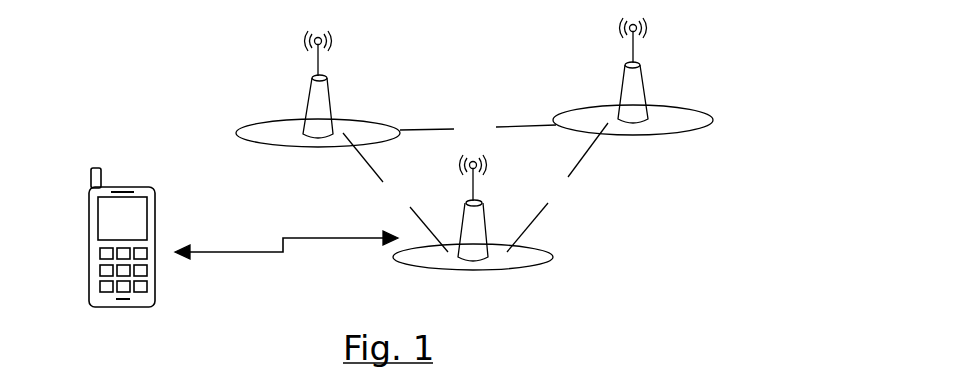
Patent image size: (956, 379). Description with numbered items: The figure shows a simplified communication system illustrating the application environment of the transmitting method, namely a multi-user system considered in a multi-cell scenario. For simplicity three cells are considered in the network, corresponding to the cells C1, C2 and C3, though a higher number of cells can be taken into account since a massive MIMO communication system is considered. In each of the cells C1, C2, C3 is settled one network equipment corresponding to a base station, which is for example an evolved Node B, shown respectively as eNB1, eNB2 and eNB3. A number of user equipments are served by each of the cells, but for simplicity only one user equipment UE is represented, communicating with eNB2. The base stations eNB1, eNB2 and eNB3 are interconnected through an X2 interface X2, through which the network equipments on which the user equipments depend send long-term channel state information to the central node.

The user equipment UE is at (122, 237).
The evolved Node B eNB1 is at (316, 108).
The evolved Node B eNB2 is at (474, 232).
The evolved Node B eNB3 is at (636, 94).
The cell C1 is at (263, 127).
The cell C2 is at (535, 257).
The cell C3 is at (688, 117).
The X2 interface X2 is at (475, 180).